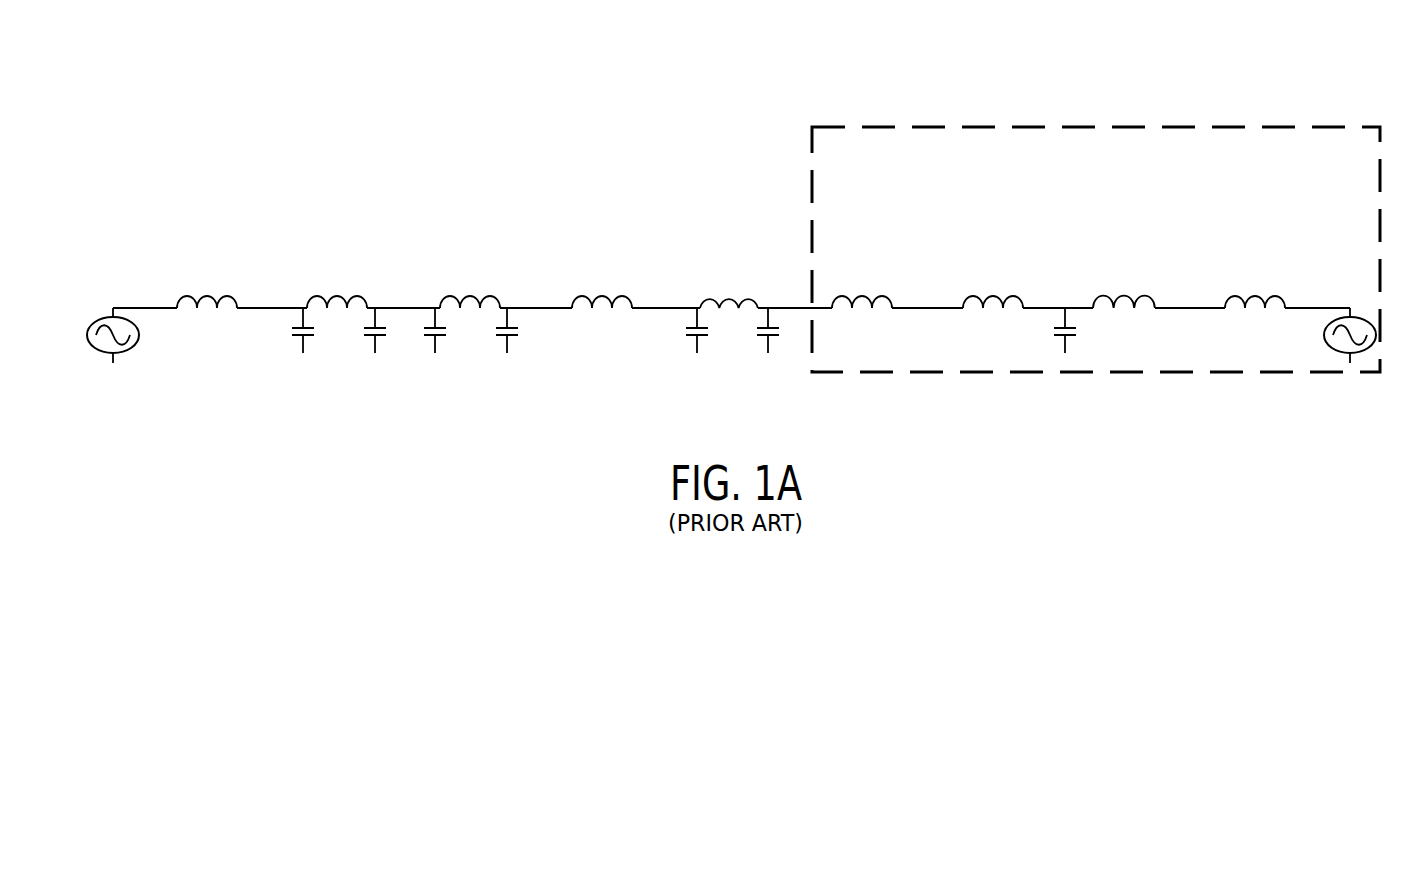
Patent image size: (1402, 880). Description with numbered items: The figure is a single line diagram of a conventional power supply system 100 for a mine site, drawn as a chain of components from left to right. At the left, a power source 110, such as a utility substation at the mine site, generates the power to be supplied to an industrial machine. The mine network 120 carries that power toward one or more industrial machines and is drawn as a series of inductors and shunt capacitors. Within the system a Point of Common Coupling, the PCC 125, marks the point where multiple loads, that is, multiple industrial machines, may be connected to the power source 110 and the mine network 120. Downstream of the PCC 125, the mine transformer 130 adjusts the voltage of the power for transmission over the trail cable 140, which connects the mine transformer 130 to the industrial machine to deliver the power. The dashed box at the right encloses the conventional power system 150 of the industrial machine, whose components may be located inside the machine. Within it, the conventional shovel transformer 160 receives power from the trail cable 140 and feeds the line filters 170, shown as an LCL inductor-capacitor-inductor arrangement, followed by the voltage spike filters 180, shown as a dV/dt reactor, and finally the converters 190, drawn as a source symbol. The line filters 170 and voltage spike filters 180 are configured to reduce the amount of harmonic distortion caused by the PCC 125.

The conventional power supply system 100 is at (303, 92).
The power source 110 is at (117, 296).
The mine network 120 is at (325, 266).
The Point of Common Coupling (PCC) 125 is at (515, 273).
The mine transformer 130 is at (572, 230).
The trail cable 140 is at (706, 230).
The conventional power system 150 is at (1267, 125).
The conventional shovel transformer 160 is at (862, 223).
The line filters 170 is at (1077, 223).
The voltage spike filters 180 is at (1256, 228).
The converters 190 is at (1350, 304).